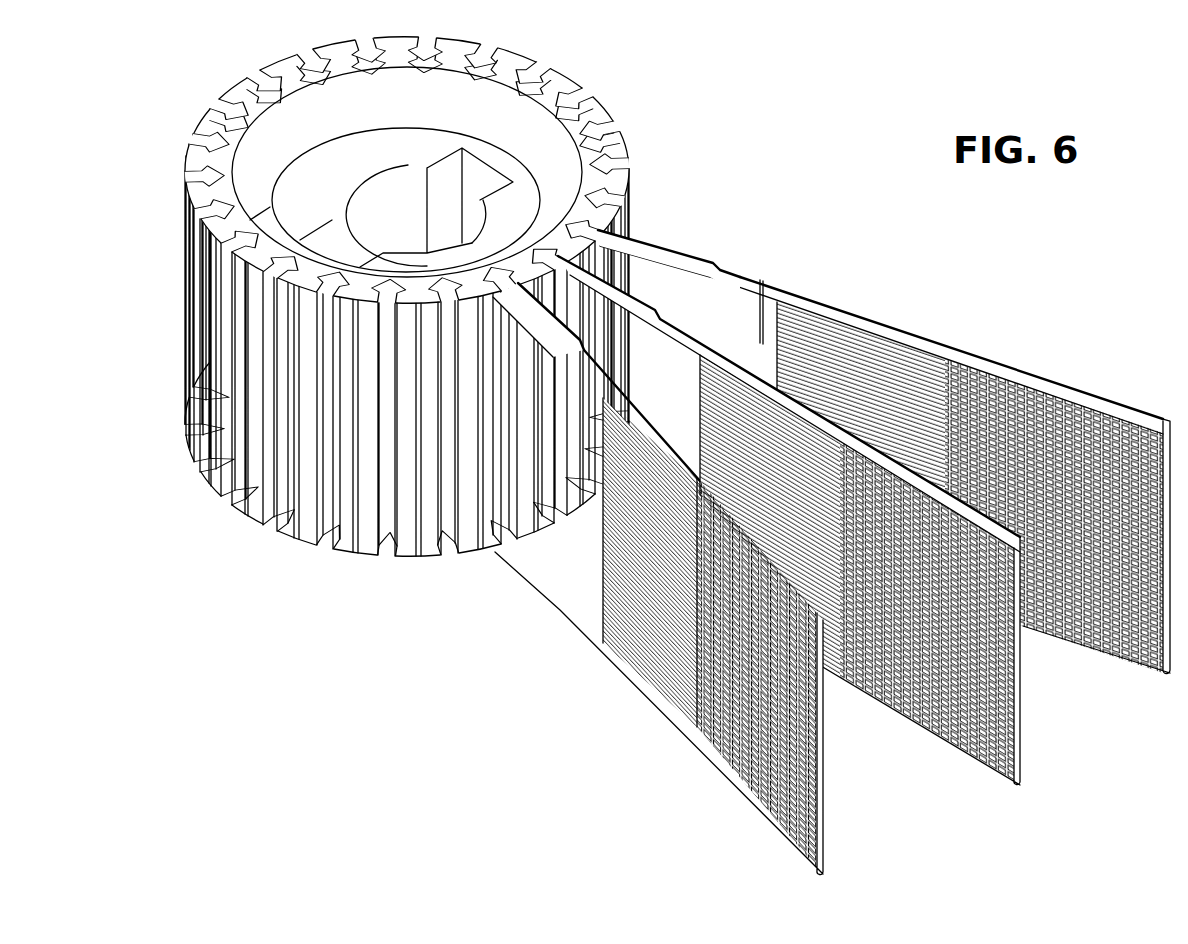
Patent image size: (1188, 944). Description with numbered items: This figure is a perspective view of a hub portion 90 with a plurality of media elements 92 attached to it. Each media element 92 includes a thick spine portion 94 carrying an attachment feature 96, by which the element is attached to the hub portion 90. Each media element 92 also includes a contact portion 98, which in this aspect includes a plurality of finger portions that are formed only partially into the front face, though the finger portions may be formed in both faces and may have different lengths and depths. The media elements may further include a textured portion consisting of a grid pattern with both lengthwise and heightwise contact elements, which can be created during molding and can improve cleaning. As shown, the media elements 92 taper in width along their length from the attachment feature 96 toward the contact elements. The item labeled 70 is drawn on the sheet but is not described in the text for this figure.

The perforated sheet 70 is at (805, 443).
The hub portion 90 is at (483, 293).
The media element 92 is at (976, 349).
The spine portion 94 is at (687, 262).
The attachment feature 96 is at (612, 207).
The contact portion 98 is at (756, 815).